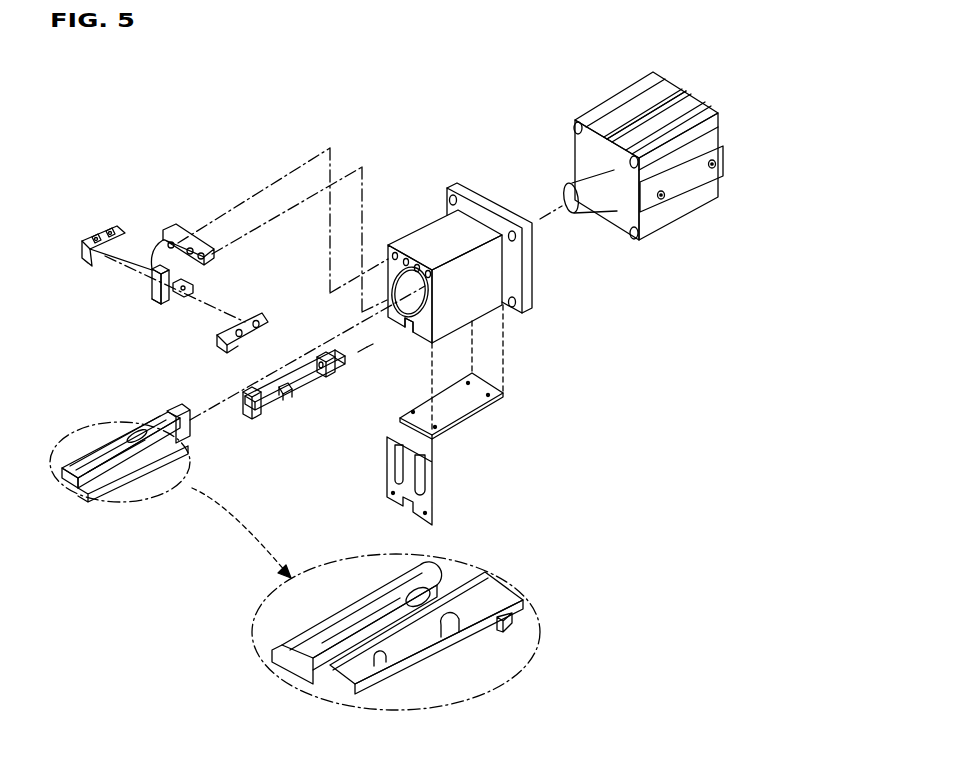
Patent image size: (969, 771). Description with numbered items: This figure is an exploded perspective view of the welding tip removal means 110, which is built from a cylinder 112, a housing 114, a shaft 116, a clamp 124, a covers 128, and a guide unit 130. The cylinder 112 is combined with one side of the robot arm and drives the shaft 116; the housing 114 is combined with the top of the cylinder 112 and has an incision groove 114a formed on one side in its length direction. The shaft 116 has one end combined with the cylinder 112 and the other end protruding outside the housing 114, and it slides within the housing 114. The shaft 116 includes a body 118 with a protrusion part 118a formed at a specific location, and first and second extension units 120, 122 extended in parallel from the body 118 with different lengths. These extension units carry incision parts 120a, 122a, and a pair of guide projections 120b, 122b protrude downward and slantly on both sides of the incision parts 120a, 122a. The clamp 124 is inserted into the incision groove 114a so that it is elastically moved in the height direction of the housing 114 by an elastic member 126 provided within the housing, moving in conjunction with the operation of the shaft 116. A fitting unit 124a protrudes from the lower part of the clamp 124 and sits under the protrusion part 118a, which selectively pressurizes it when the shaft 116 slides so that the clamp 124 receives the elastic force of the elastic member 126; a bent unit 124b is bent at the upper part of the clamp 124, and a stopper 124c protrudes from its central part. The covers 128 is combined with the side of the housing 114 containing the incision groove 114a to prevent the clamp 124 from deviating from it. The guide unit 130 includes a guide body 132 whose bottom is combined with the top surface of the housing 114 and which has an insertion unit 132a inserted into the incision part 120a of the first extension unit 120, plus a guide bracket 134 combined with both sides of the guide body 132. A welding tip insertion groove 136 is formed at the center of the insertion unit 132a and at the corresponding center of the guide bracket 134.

The welding tip removal means 110 is at (110, 175).
The cylinder 112 is at (673, 213).
The housing 114 is at (420, 237).
The incision groove 114a is at (407, 324).
The shaft 116 is at (90, 412).
The body 118 is at (165, 420).
The protrusion part 118a is at (536, 616).
The first extension unit 120 is at (272, 657).
The incision part 120a is at (330, 640).
The guide projection 120b is at (378, 592).
The second extension unit 122 is at (352, 693).
The incision part 122a is at (380, 660).
The guide projection 122b is at (430, 638).
The clamp 124 is at (308, 475).
The fitting unit 124a is at (310, 388).
The bent unit 124b is at (247, 392).
The stopper 124c is at (288, 390).
The elastic member 126 is at (361, 353).
The covers 128 is at (463, 402).
The guide unit 130 is at (188, 153).
The guide body 132 is at (165, 230).
The insertion unit 132a is at (152, 292).
The guide bracket 134 is at (112, 228).
The welding tip insertion groove 136 is at (84, 240).